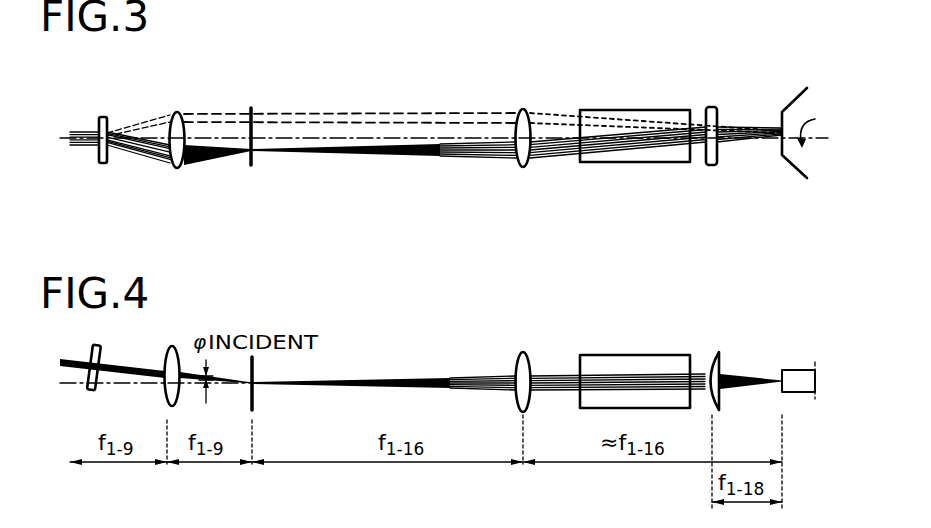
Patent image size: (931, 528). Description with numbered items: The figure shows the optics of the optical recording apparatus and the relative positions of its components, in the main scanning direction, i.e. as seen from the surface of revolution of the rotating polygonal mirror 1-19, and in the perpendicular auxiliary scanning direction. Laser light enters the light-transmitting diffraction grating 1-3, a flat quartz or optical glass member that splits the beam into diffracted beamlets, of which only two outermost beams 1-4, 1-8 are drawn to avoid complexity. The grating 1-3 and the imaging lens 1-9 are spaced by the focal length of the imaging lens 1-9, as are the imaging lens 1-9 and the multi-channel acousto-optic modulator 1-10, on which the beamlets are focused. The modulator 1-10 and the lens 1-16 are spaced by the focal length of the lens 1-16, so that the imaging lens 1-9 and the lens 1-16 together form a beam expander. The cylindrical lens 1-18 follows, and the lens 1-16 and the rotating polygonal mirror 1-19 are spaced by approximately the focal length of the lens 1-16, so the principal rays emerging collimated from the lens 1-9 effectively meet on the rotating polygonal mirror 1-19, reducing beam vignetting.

The light-transmitting diffraction grating 1-3 is at (104, 117).
The stray (diffracted) light 1-4 is at (142, 127).
The signal light beam 1-8 is at (134, 157).
The imaging lens 1-9 is at (180, 112).
The multi-channel acousto-optic modulator 1-10 is at (251, 108).
The lens 1-16 is at (522, 109).
The cylindrical lens 1-18 is at (710, 107).
The rotating polygonal mirror 1-19 is at (793, 102).